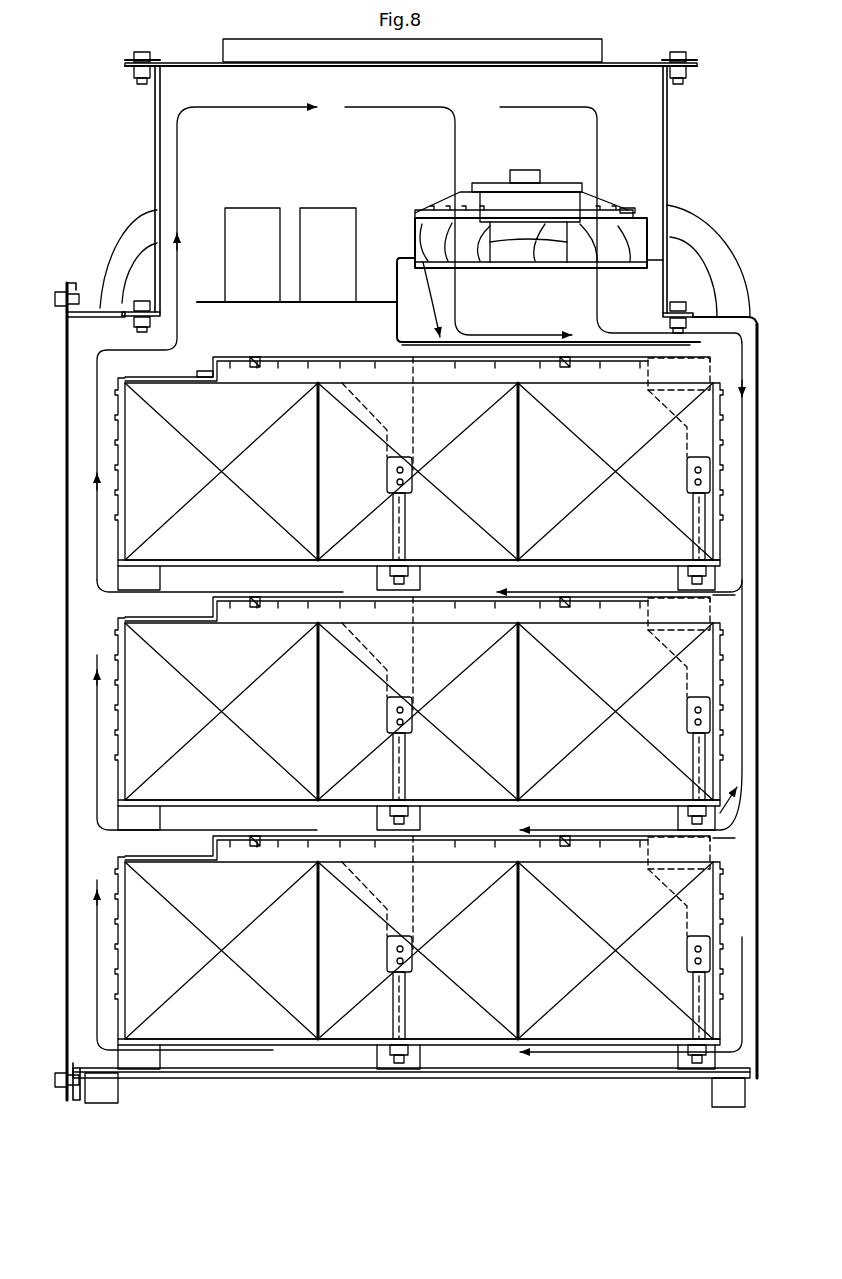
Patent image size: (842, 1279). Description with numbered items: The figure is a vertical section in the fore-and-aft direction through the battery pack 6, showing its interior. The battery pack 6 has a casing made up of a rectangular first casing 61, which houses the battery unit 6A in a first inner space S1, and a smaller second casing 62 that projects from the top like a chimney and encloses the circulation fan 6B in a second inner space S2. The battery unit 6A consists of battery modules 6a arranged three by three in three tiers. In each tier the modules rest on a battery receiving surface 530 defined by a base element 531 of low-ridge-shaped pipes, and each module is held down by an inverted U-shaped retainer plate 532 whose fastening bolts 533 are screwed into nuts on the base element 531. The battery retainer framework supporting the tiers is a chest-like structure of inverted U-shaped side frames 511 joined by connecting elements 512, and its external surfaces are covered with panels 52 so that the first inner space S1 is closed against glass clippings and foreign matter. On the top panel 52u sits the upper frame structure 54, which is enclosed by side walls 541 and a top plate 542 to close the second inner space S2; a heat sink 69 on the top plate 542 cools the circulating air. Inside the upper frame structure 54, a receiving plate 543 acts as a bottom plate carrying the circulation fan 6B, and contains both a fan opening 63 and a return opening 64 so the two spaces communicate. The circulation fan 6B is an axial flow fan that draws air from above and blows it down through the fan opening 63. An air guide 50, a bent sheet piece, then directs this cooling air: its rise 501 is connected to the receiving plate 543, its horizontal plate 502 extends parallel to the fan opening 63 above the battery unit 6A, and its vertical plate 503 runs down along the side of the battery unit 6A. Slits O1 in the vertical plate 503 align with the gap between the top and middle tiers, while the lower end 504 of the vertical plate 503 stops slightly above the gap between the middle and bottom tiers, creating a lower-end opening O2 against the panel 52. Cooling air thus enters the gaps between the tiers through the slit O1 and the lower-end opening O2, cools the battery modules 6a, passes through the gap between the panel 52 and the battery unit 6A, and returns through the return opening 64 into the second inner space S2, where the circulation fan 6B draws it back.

The battery pack 6 is at (106, 78).
The upper frame structure 54 is at (152, 108).
The side wall 541 is at (155, 135).
The top plate 542 is at (413, 68).
The receiving plate 543 is at (250, 300).
The side frame 511 is at (142, 213).
The connecting element 512 is at (80, 320).
The first casing 61 is at (118, 306).
The second casing 62 is at (682, 153).
The heat sink 69 is at (602, 50).
The panel 52 is at (70, 830).
The panel 52u is at (700, 313).
The battery unit 6A is at (133, 372).
The circulation fan 6B is at (622, 243).
The battery module 6a is at (342, 395).
The air guide 50 is at (415, 246).
The rise 501 is at (398, 322).
The horizontal plate 502 is at (487, 347).
The vertical plate 503 is at (728, 452).
The lower end 504 is at (733, 780).
The fan opening 63 is at (537, 275).
The return opening 64 is at (187, 312).
The battery receiving surface 530 is at (387, 556).
The base element 531 is at (420, 567).
The retainer plate 532 is at (370, 355).
The fastening bolt 533 is at (392, 527).
The first inner space S1 is at (473, 708).
The second inner space S2 is at (372, 155).
The slit O1 is at (722, 605).
The lower-end opening O2 is at (708, 845).